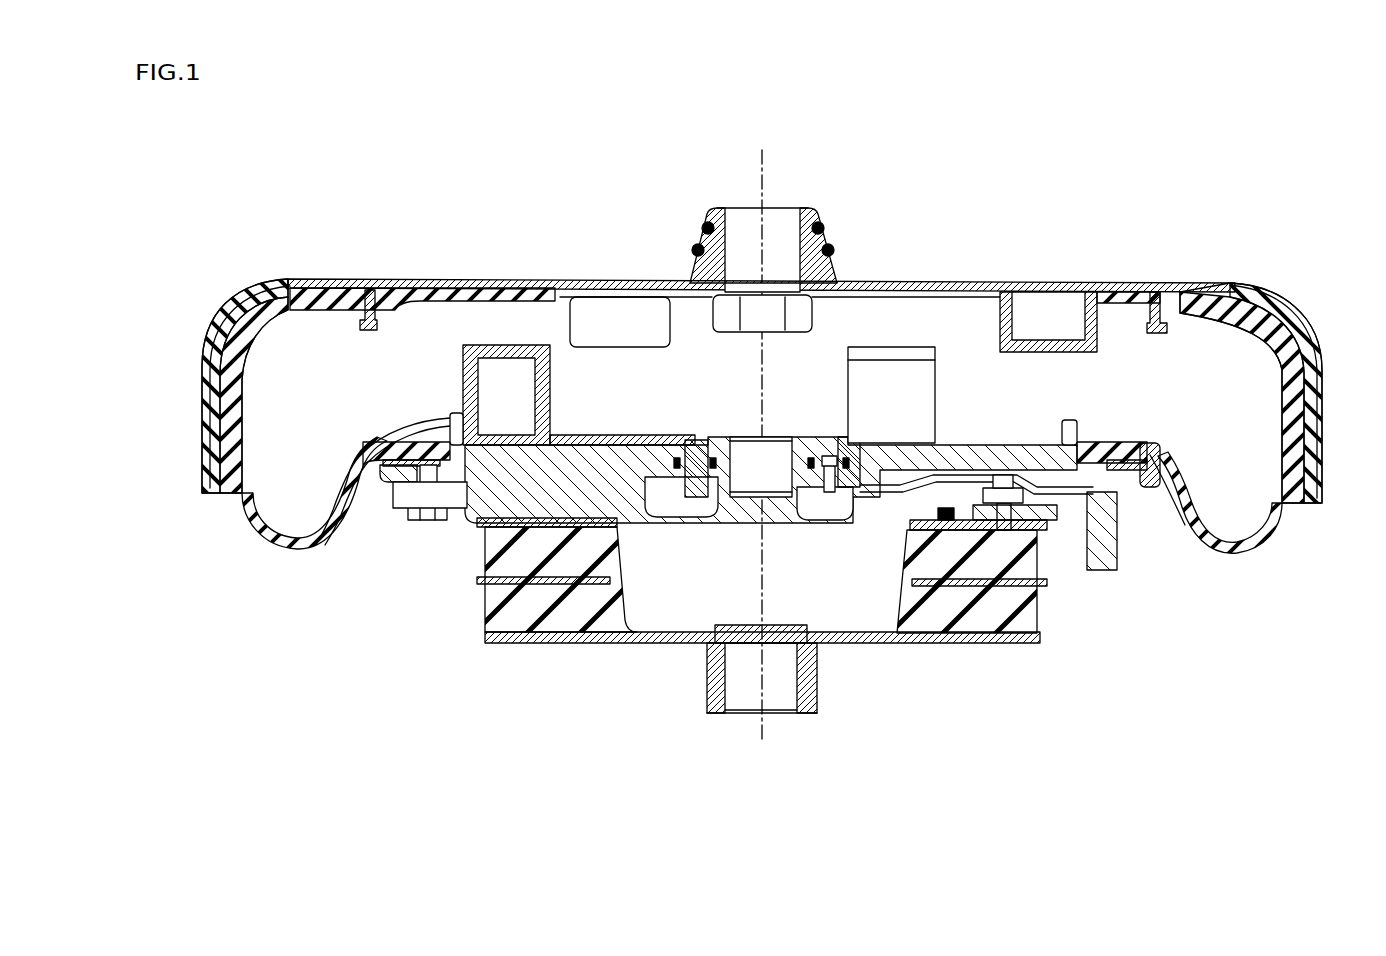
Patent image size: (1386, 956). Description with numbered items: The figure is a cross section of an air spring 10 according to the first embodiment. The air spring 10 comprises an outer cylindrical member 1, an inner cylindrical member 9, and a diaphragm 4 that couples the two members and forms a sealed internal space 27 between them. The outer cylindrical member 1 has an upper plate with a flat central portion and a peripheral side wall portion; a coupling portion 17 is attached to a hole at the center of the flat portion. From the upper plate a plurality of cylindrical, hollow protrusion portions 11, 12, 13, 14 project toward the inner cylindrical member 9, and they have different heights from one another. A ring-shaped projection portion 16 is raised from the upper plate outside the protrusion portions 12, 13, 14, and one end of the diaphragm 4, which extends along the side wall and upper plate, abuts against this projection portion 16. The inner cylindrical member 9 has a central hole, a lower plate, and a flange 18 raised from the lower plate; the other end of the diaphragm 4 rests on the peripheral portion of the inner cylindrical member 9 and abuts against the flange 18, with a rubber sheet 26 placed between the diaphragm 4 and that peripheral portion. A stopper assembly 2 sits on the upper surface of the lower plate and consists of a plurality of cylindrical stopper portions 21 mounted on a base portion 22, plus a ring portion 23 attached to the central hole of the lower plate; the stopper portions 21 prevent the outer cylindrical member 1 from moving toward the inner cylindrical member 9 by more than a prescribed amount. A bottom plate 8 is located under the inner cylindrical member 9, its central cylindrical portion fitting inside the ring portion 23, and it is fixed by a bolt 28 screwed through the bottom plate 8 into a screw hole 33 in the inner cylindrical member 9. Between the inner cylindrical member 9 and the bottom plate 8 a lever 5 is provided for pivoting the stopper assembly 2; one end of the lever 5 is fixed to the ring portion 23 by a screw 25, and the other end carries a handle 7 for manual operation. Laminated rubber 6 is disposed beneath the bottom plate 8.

The air spring 10 is at (1241, 160).
The outer cylindrical member 1 is at (930, 290).
The stopper assembly 2 is at (548, 348).
The stopper portion 21 is at (467, 400).
The base portion 22 is at (570, 437).
The ring portion 23 is at (690, 470).
The diaphragm 4 is at (1233, 550).
The lever 5 is at (1070, 497).
The laminated rubber 6 is at (578, 612).
The handle 7 is at (1115, 553).
The bottom plate 8 is at (1045, 512).
The inner cylindrical member 9 is at (497, 462).
The protrusion portion 11 is at (746, 308).
The protrusion portion 12 is at (545, 300).
The protrusion portion 13 is at (570, 302).
The protrusion portion 14 is at (792, 330).
The ring-shaped projection portion 16 is at (1163, 307).
The coupling portion 17 is at (1000, 327).
The flange 18 is at (333, 492).
The screw 25 is at (826, 497).
The rubber sheet 26 is at (985, 292).
The internal space 27 is at (270, 505).
The bolt 28 is at (428, 512).
The screw hole 33 is at (405, 478).